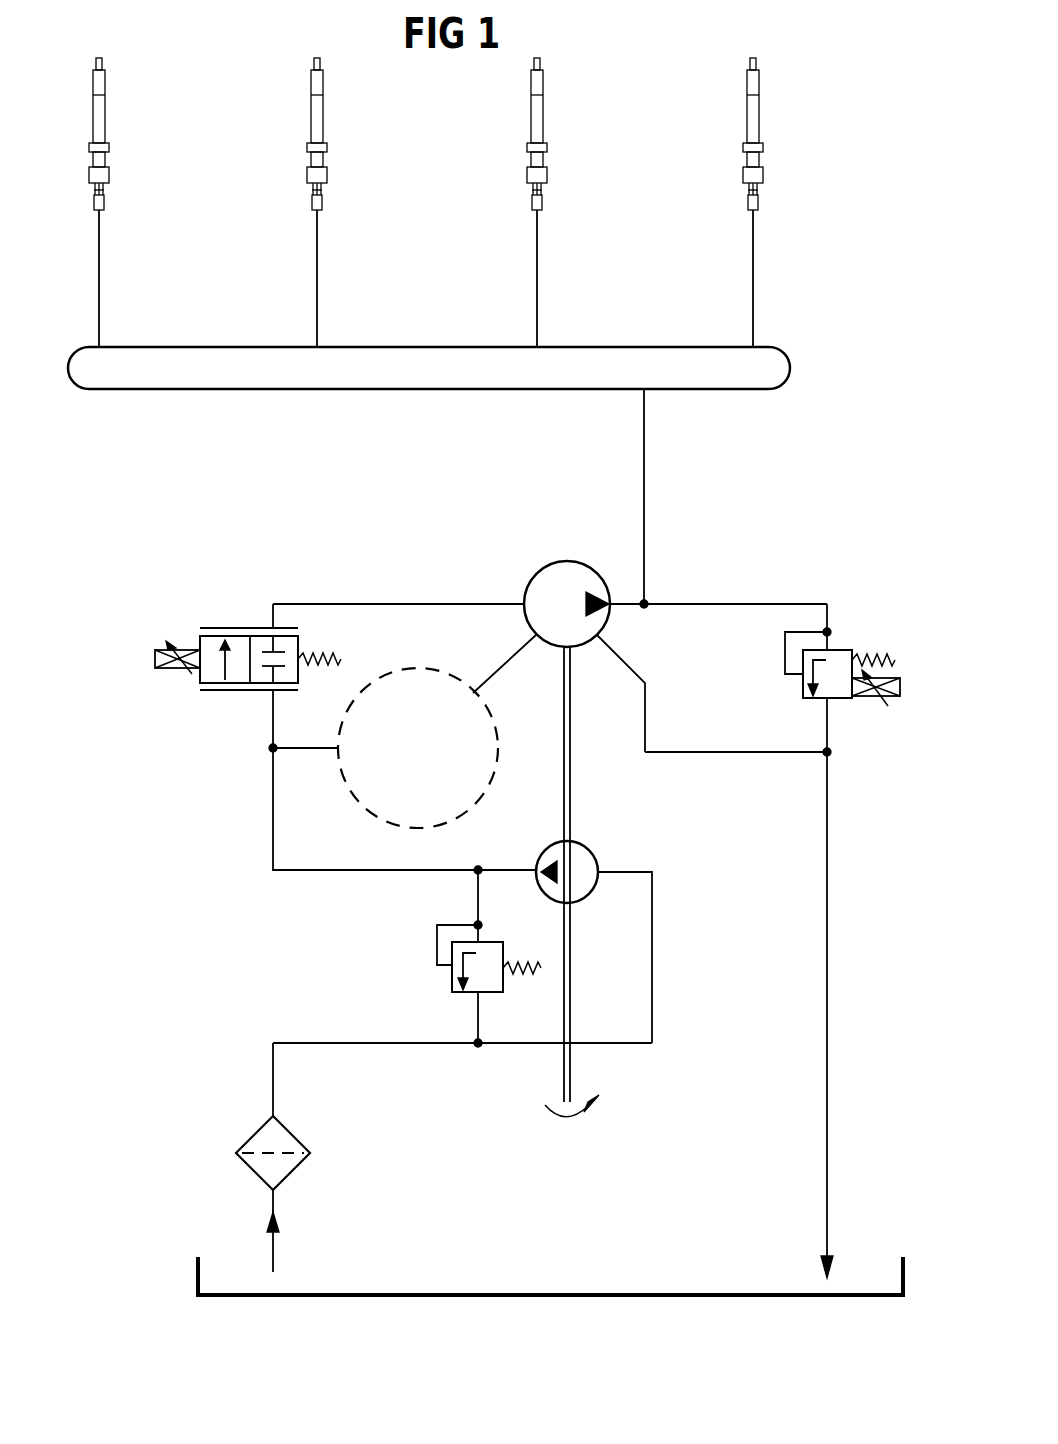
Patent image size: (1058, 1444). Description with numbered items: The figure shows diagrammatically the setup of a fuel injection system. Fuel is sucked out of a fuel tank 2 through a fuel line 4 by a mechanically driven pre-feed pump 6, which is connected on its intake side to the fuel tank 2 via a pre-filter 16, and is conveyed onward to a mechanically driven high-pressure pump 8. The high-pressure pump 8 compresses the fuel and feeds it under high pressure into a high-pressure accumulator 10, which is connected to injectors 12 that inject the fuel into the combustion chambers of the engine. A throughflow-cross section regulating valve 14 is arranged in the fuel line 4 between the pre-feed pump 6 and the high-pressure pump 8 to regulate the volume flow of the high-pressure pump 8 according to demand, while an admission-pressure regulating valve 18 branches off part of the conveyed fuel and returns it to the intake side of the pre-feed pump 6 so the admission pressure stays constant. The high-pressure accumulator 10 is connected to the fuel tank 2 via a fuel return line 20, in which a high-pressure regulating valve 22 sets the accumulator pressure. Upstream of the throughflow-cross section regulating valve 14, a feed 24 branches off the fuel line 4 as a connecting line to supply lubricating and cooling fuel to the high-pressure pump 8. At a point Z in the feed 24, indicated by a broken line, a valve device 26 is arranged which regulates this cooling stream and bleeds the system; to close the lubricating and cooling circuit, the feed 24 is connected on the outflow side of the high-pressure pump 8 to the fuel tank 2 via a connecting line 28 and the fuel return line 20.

The fuel tank 2 is at (452, 1292).
The fuel line 4 is at (272, 815).
The pre-feed pump 6 is at (593, 853).
The high-pressure pump 8 is at (544, 567).
The high-pressure accumulator 10 is at (245, 372).
The injectors 12 is at (106, 112).
The throughflow-cross section regulating valve 14 is at (219, 627).
The pre-filter 16 is at (302, 1138).
The admission-pressure regulating valve 18 is at (452, 982).
The fuel return line 20 is at (827, 970).
The high-pressure regulating valve 22 is at (803, 690).
The feed 24 is at (305, 750).
The valve device 26 is at (475, 800).
The connecting line 28 is at (648, 725).
The point Z is at (395, 676).